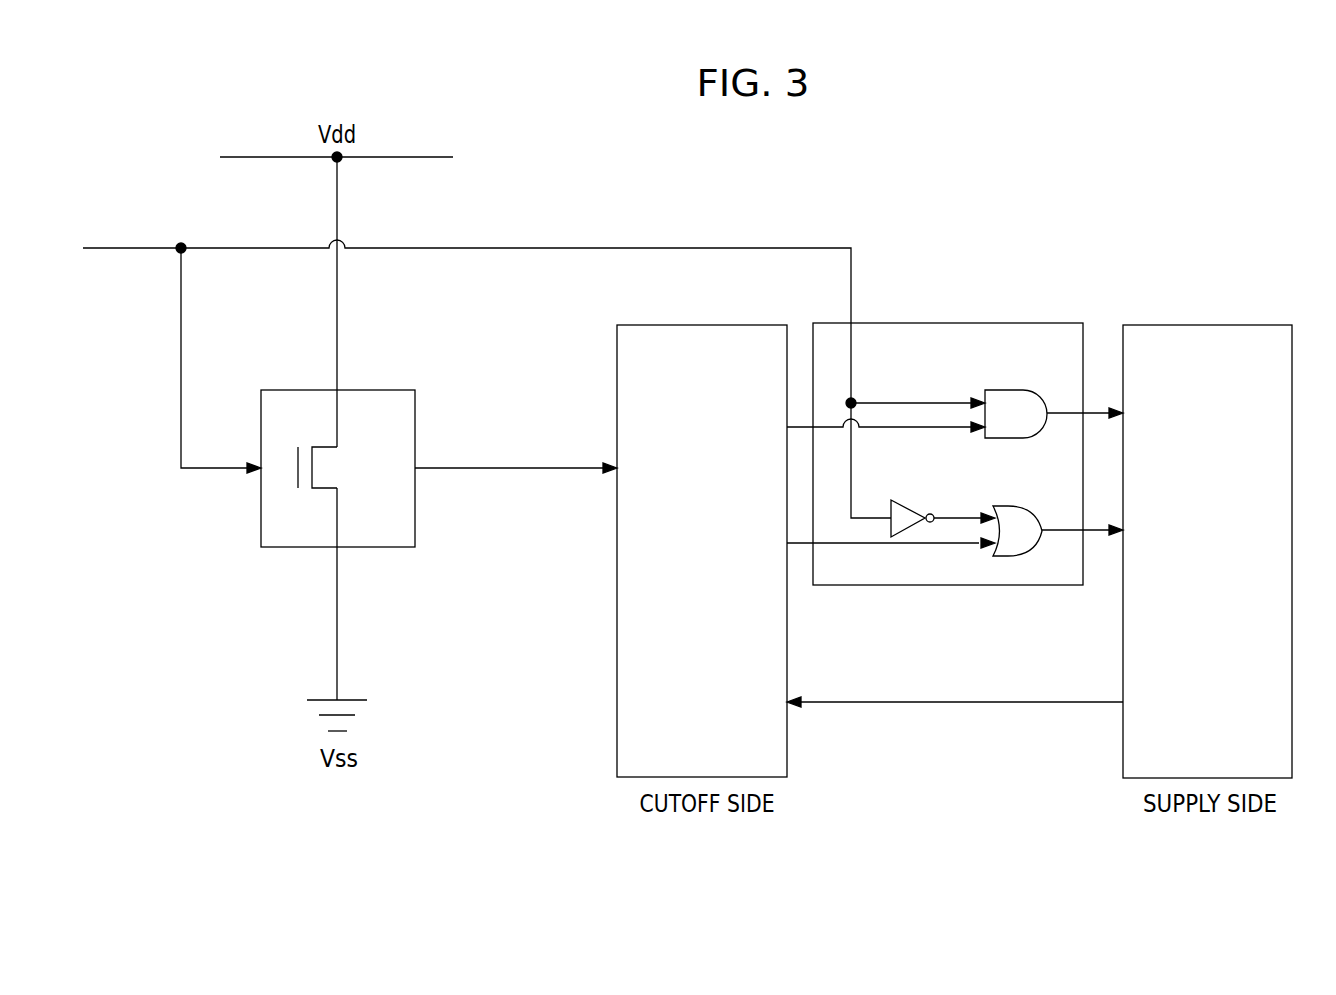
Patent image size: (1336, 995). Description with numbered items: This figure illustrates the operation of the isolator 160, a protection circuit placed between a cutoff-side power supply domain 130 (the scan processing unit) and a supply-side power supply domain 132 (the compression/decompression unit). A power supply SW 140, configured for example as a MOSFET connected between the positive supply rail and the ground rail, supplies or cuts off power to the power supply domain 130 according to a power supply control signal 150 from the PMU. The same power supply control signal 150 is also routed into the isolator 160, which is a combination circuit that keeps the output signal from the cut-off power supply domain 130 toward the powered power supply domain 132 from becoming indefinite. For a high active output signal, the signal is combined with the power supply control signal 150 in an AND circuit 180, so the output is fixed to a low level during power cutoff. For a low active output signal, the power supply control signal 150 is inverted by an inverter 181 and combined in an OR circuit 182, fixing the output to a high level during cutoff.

The power supply domain 130 is at (705, 324).
The power supply domain 132 is at (1212, 324).
The power supply SW 140 is at (403, 390).
The power supply control signal 150 is at (123, 246).
The isolator 160 is at (955, 427).
The AND circuit 180 is at (985, 390).
The inverter 181 is at (903, 500).
The OR circuit 182 is at (993, 506).